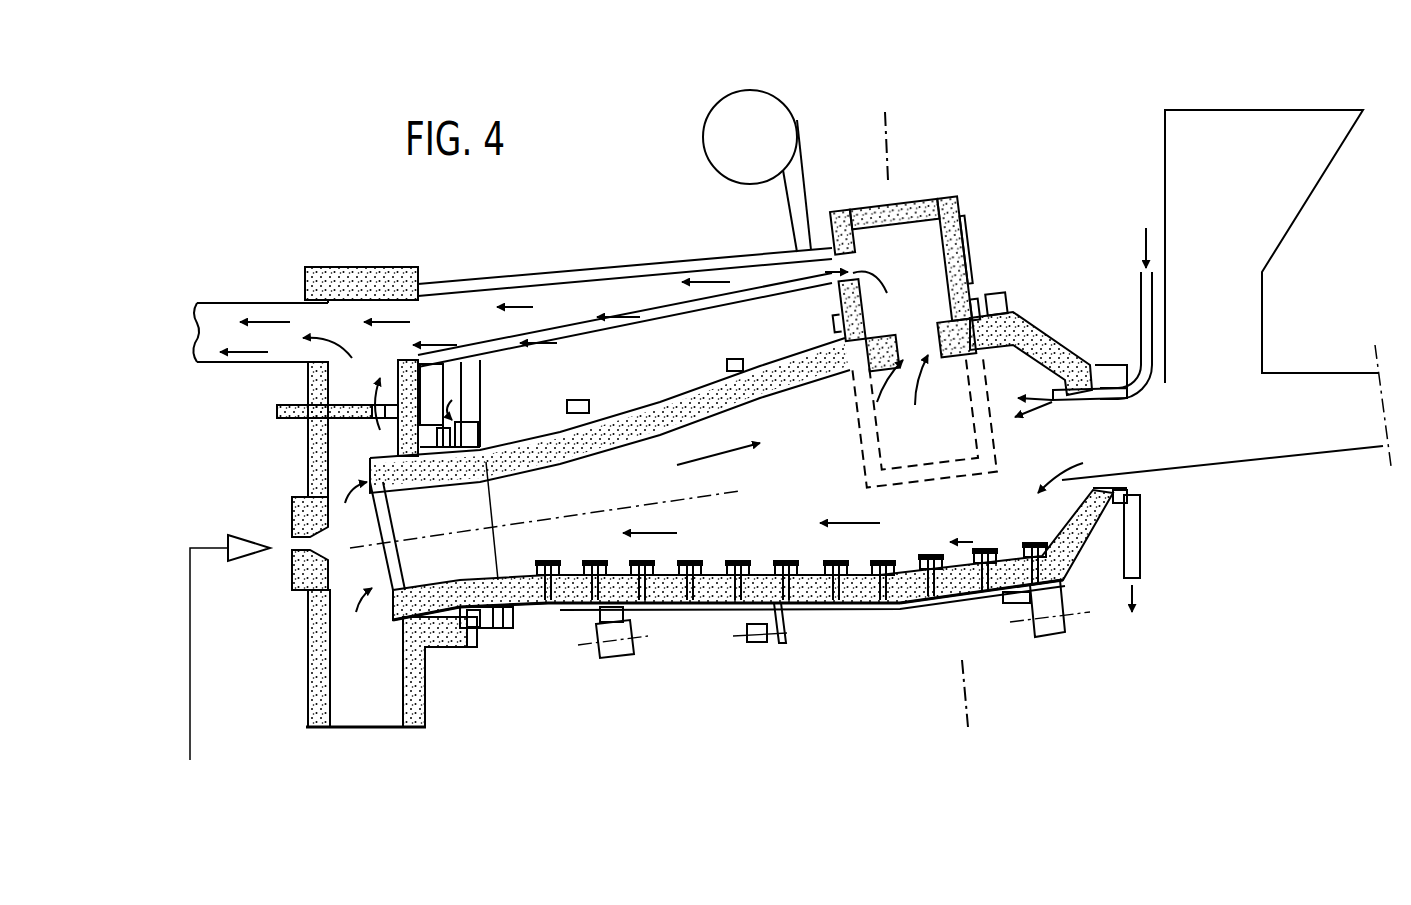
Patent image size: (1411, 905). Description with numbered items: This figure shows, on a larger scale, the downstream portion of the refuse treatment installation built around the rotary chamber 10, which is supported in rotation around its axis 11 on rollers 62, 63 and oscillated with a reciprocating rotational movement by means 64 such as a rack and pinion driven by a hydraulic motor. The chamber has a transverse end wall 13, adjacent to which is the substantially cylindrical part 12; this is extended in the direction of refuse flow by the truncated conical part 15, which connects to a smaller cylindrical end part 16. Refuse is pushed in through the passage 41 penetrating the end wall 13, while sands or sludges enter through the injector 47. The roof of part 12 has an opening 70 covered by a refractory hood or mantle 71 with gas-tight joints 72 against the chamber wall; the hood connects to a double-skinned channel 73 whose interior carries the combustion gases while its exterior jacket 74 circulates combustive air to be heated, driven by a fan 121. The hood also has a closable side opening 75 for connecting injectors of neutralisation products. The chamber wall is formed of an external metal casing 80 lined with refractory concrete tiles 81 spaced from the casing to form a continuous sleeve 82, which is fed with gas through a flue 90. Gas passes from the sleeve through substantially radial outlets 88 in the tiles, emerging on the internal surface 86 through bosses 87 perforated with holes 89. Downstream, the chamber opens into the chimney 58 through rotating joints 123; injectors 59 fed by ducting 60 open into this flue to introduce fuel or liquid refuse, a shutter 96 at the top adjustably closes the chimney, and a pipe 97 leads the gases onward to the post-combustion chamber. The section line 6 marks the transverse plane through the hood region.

The chamber 10 is at (1058, 320).
The axis 11 is at (583, 512).
The substantially cylindrical part 12 is at (958, 605).
The transverse end wall 13 is at (1073, 362).
The truncated conical part 15 is at (678, 610).
The end part of cylindrical configuration 16 is at (492, 612).
The passage 41 is at (1185, 472).
The injector 47 is at (1111, 400).
The flue 58 is at (308, 700).
The injector 59 is at (248, 546).
The ducting 60 is at (190, 651).
The roller 62 is at (1066, 633).
The roller 63 is at (621, 661).
The means of oscillating the chamber 64 is at (784, 650).
The opening 70 is at (900, 324).
The hood or mantle 71 is at (930, 195).
The gas-tight joints 72 is at (970, 293).
The double-skinned channel 73 is at (651, 263).
The exterior jacket 74 is at (503, 283).
The opening 75 is at (963, 241).
The external metal casing 80 is at (850, 607).
The refractory concrete tiles 81 is at (663, 405).
The sleeve 82 is at (900, 610).
The internal surface 86 is at (735, 561).
The bosses or protuberances 87 is at (797, 555).
The outlets 88 is at (540, 605).
The holes 89 is at (788, 561).
The flue 90 is at (468, 425).
The shutter 96 is at (277, 412).
The pipe 97 is at (240, 303).
The fan 121 is at (718, 128).
The rotating joints 123 is at (468, 403).
The section line 6- 6 is at (937, 425).